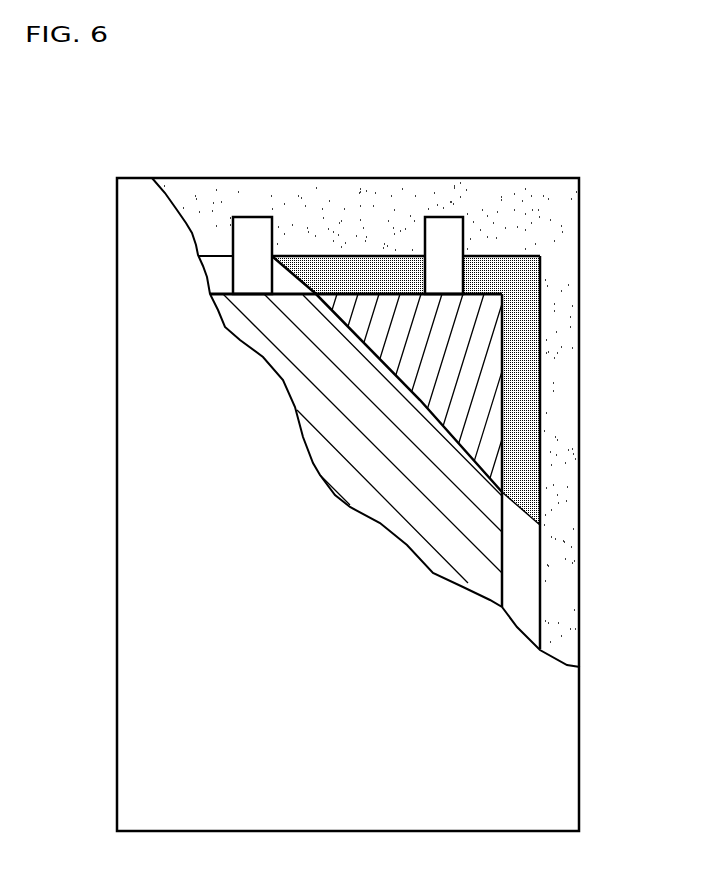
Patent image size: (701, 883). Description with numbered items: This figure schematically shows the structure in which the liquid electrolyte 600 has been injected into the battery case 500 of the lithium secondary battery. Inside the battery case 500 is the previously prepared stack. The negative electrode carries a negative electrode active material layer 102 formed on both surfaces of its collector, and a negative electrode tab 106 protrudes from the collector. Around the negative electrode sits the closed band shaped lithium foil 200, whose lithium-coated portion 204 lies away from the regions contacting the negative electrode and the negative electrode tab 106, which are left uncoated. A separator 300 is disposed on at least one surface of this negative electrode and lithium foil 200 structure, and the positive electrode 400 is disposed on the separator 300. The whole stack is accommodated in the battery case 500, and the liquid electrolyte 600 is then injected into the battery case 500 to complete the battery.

The battery case 500 is at (167, 640).
The liquid electrolyte 600 is at (350, 205).
The lithium foil 200 is at (500, 253).
The lithium-coated portion 204 is at (520, 332).
The negative electrode tab 106 is at (441, 237).
The negative electrode active material layer 102 is at (488, 408).
The positive electrode 400 is at (483, 505).
The separator 300 is at (520, 562).